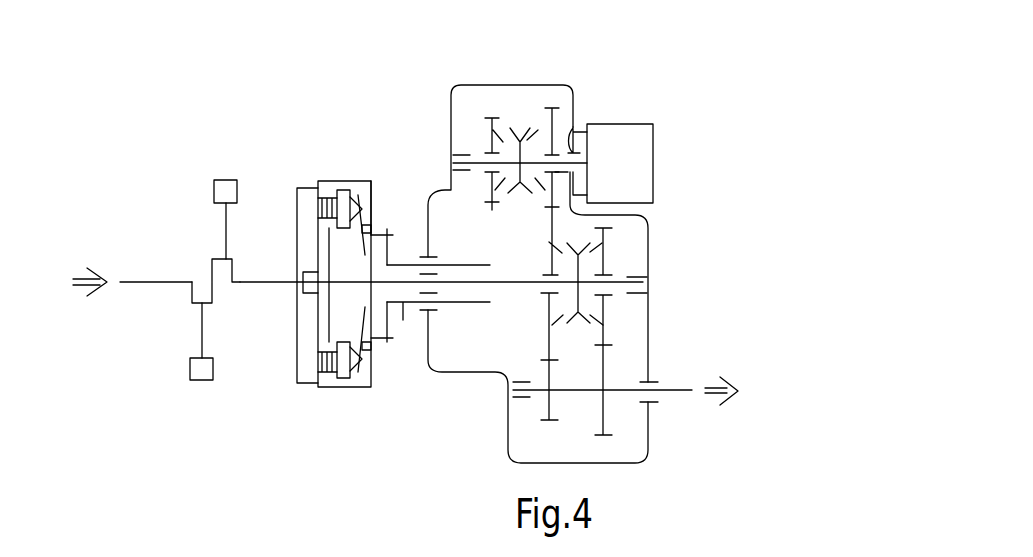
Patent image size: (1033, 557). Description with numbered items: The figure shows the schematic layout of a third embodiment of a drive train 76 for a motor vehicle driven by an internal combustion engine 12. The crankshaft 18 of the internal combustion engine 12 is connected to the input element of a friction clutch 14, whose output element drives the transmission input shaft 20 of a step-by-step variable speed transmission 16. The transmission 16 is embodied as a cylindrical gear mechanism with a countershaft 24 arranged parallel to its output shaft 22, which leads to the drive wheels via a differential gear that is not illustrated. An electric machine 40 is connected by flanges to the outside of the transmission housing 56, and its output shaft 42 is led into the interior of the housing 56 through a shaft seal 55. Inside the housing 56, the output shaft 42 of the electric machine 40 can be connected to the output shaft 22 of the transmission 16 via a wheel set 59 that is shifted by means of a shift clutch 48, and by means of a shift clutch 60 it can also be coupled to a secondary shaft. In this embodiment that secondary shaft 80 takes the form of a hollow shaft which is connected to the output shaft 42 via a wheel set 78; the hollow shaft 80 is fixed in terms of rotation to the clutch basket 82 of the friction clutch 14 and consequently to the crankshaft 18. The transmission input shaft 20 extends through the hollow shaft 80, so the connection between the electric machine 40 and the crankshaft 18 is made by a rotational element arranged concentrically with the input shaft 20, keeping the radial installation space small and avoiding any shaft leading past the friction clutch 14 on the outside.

The drive train 76 is at (130, 185).
The internal combustion engine 12 is at (215, 293).
The crankshaft 18 is at (262, 281).
The friction clutch 14 is at (345, 176).
The clutch basket 82 is at (372, 196).
The secondary shaft 80 is at (403, 320).
The step-by-step variable speed transmission 16 is at (446, 391).
The wheel set 78 is at (480, 101).
The shift clutch 60 is at (513, 108).
The shift clutch 48 is at (534, 113).
The wheel set 59 is at (563, 101).
The shaft seal 55 is at (575, 128).
The electric machine 40 is at (655, 152).
The output shaft 42 is at (590, 172).
The transmission housing 56 is at (650, 232).
The transmission input shaft 20 is at (613, 283).
The output shaft 22 is at (669, 427).
The countershaft 24 is at (721, 391).